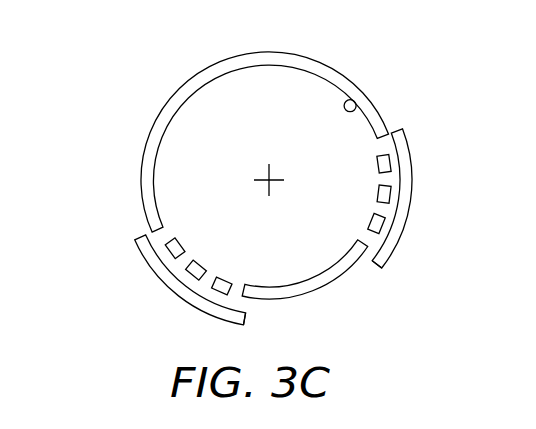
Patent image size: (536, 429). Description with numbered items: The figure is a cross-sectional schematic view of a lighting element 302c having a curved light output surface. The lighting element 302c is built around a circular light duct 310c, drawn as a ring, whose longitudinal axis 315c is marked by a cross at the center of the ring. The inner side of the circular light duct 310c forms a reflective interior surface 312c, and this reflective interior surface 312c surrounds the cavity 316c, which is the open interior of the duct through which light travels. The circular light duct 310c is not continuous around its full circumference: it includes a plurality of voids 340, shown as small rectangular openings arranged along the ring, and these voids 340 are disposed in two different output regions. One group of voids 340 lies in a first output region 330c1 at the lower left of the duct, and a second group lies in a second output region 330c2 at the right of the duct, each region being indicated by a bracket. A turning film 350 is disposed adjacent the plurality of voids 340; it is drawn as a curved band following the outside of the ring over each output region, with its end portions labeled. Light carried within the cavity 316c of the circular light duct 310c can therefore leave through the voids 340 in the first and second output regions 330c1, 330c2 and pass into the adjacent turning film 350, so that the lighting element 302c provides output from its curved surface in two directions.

The lighting element 302c is at (124, 100).
The circular light duct 310c is at (325, 75).
The reflective interior surface 312c is at (355, 110).
The longitudinal axis 315c is at (272, 177).
The cavity 316c is at (241, 161).
The voids 340 is at (367, 207).
The turning film 350 is at (248, 317).
The first output region 330c1 is at (172, 290).
The second output region 330c2 is at (437, 200).